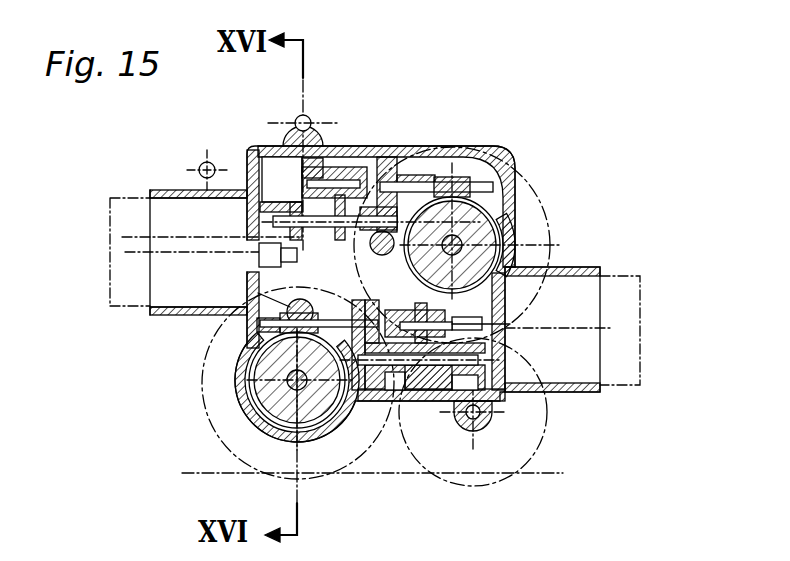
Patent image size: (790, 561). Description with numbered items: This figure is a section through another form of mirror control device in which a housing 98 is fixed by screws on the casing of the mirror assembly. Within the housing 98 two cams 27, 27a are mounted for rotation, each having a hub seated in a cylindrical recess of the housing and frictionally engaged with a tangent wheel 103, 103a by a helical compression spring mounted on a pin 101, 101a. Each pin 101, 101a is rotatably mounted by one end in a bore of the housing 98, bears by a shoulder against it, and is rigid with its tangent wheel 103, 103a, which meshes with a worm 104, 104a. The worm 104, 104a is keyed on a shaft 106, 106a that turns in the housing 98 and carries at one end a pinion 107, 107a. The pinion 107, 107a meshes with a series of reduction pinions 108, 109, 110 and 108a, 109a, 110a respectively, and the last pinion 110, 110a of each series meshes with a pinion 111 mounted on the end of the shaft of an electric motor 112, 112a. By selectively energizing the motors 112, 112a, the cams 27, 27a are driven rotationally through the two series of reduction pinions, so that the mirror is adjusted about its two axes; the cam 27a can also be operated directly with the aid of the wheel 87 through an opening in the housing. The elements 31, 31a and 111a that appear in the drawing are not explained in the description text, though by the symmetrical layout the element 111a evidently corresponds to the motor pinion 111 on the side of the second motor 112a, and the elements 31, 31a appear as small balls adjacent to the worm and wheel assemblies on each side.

The cam 27 is at (225, 437).
The cam 27a is at (545, 206).
The ball 31 is at (378, 255).
The ball lever 31a is at (246, 291).
The wheel 87 is at (540, 430).
The housing 98 is at (375, 172).
The pin 101 is at (290, 380).
The pin 101a is at (462, 248).
The tangent wheel 103 is at (265, 395).
The tangent wheel 103a is at (490, 237).
The worm 104 is at (280, 328).
The worm 104a is at (462, 183).
The shaft 106 is at (316, 388).
The shaft 106a is at (427, 172).
The pinion 107 is at (378, 302).
The pinion 107a is at (393, 160).
The pinion 108 is at (398, 372).
The pinion 108a is at (413, 172).
The pinion 109 is at (430, 320).
The pinion 109a is at (330, 178).
The pinion 110 is at (435, 367).
The pinion 110a is at (312, 228).
The pinion 111 is at (500, 327).
The plunger 111a is at (280, 261).
The electric motor 112 is at (638, 297).
The electric motor 112a is at (150, 218).